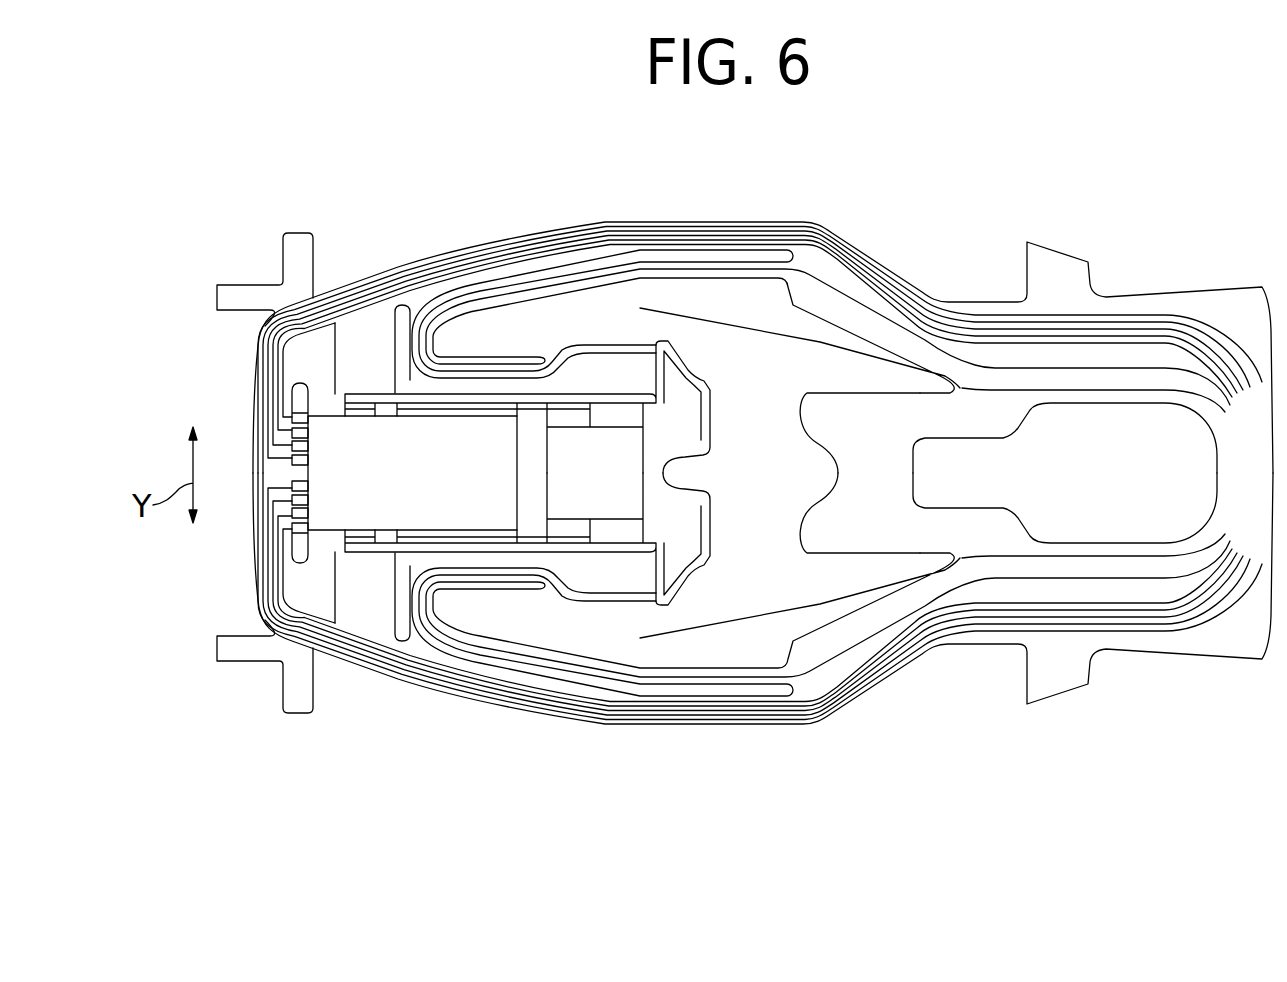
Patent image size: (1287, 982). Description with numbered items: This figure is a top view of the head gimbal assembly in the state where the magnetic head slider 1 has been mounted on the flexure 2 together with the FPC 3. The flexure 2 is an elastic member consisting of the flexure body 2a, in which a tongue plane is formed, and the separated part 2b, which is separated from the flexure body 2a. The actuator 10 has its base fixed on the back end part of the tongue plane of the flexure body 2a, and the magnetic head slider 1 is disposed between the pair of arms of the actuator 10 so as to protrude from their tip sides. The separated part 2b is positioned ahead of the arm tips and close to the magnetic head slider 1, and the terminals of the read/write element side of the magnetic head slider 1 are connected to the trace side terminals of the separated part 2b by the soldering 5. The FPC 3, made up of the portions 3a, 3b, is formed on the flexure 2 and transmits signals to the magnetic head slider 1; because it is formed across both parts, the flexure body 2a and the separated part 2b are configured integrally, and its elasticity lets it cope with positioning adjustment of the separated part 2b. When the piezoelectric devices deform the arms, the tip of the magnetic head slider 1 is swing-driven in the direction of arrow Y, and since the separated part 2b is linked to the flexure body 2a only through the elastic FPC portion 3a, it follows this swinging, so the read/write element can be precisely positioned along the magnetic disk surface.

The magnetic head slider 1 is at (378, 437).
The flexure 2 is at (745, 559).
The flexure body 2a is at (378, 668).
The separated part 2b is at (265, 534).
The FPC 3 is at (760, 546).
The FPC portion 3a is at (581, 727).
The FPC portion 3b is at (722, 690).
The soldering 5 is at (300, 393).
The actuator 10 is at (610, 198).